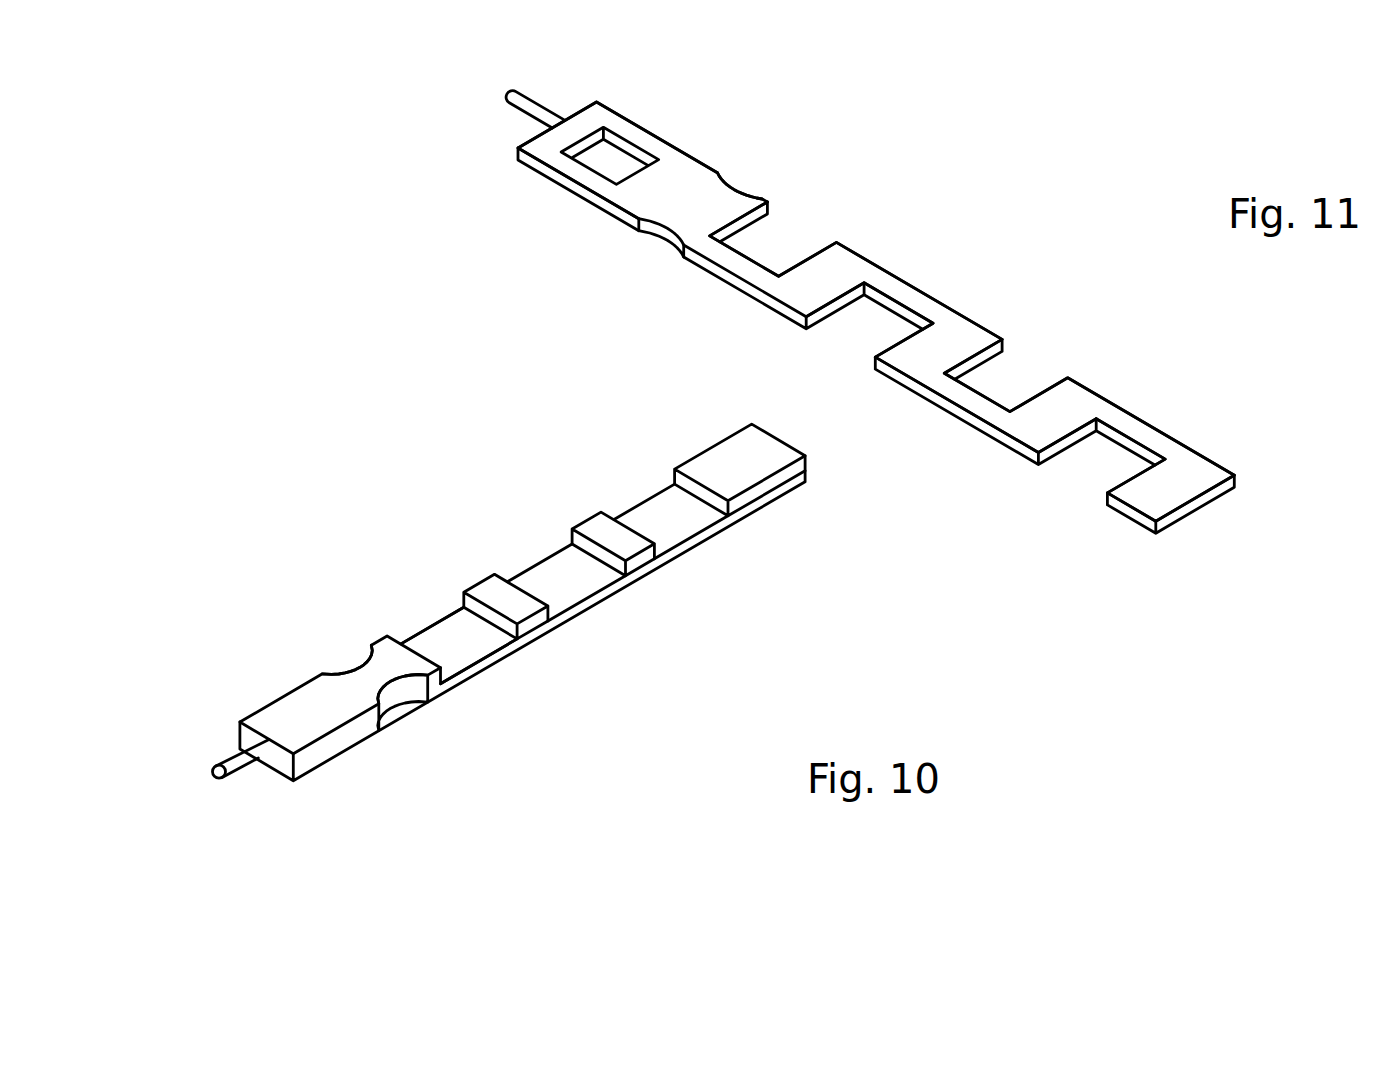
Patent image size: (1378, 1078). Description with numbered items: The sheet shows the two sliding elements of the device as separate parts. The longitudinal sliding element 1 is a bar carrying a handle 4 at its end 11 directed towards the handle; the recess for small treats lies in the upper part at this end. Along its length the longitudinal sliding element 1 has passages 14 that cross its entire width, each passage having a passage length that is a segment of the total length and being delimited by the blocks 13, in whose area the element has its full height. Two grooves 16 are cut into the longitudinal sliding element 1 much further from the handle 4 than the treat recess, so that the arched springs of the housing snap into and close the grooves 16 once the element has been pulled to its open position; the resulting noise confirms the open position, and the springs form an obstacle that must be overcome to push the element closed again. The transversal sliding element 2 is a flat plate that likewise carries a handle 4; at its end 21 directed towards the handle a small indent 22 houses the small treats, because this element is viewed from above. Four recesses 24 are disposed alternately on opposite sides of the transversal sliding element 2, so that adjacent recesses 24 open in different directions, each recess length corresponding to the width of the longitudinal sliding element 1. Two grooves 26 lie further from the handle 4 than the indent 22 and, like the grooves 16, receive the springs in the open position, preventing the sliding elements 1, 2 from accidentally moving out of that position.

In FIG. 10, the longitudinal sliding element 1 is at (347, 507).
In FIG. 11, the transversal sliding element 2 is at (985, 203).
In FIG. 11, the handle 4 is at (525, 110).
In FIG. 10, the handle 4 is at (212, 775).
In FIG. 10, the end 11 is at (375, 677).
In FIG. 10, the blocks 13 is at (493, 593).
In FIG. 10, the passages 14 is at (448, 640).
In FIG. 10, the grooves 16 is at (402, 698).
In FIG. 11, the end 21 is at (578, 130).
In FIG. 11, the indent 22 is at (622, 160).
In FIG. 11, the recesses 24 is at (778, 240).
In FIG. 11, the grooves 26 is at (737, 187).